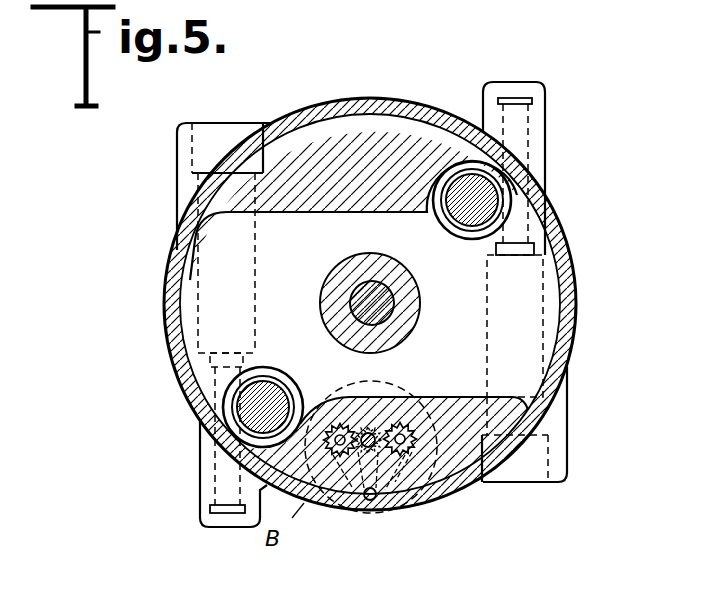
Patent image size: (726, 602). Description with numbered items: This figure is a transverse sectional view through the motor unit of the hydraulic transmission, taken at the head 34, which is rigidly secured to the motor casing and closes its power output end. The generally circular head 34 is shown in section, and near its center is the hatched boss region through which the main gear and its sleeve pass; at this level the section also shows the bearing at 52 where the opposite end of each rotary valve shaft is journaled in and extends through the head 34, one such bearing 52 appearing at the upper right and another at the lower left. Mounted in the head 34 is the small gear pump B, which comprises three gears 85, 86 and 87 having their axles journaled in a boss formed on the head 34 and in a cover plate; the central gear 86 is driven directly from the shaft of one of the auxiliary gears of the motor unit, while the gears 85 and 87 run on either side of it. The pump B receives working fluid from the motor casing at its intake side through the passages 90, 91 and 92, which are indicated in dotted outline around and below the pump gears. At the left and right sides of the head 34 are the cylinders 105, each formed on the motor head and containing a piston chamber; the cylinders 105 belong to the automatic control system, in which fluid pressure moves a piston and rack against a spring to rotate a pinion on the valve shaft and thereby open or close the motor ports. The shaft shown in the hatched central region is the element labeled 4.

The head 34 is at (378, 108).
The cylinder 105 is at (178, 166).
The shaft bearing in the head 52 is at (434, 213).
The shaft 4 is at (392, 292).
The gear 85 is at (337, 424).
The central gear 86 is at (378, 427).
The gear 87 is at (412, 428).
The passage 90 is at (378, 500).
The passage 91 is at (413, 490).
The passage 92 is at (346, 505).